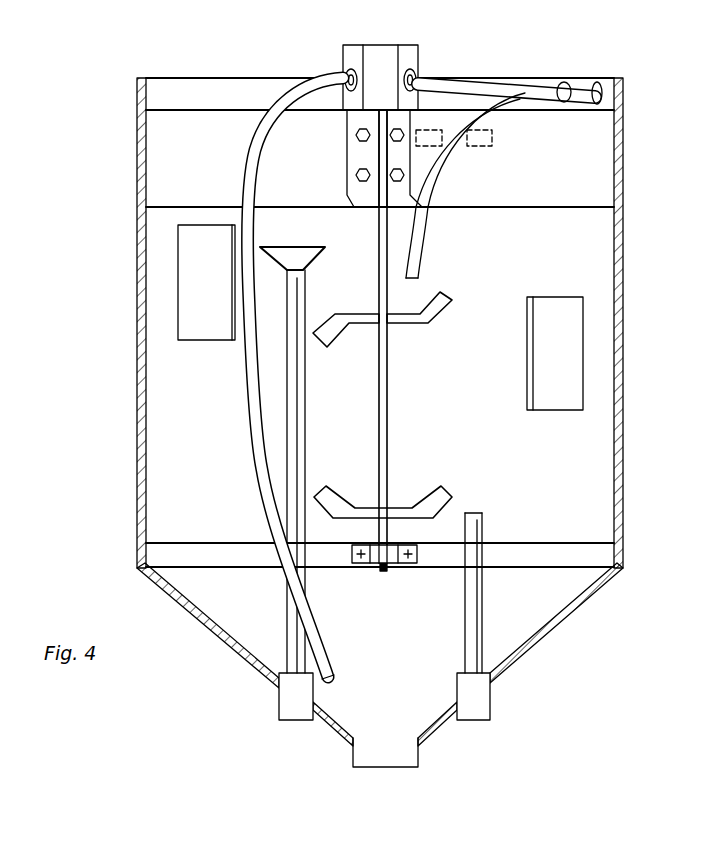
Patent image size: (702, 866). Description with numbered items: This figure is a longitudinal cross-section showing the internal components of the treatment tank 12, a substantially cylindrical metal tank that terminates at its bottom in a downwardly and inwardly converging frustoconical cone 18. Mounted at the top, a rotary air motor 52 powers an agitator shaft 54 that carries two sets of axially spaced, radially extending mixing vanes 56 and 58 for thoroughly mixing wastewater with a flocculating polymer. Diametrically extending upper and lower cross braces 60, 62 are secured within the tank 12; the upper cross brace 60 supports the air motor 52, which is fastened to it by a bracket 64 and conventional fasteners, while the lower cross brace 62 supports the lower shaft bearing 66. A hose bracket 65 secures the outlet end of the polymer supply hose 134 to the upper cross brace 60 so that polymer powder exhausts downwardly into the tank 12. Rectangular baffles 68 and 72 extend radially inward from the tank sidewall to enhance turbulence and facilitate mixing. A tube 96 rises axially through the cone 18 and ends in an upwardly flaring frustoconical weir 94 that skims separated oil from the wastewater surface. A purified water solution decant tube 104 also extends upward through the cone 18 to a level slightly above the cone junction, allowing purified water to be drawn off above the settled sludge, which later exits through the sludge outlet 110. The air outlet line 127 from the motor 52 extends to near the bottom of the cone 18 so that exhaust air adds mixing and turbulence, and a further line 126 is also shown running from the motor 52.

The treatment tank 12 is at (136, 270).
The cone 18 is at (240, 652).
The rotary air motor 52 is at (378, 45).
The agitator shaft 54 is at (387, 464).
The mixing vanes 56 is at (408, 324).
The mixing vanes 58 is at (440, 490).
The upper cross brace 60 is at (160, 136).
The lower cross brace 62 is at (548, 529).
The bracket 64 is at (352, 159).
The hose bracket 65 is at (492, 146).
The lower shaft bearing 66 is at (388, 571).
The baffle 68 is at (212, 340).
The baffle 72 is at (558, 410).
The frustoconical weir 94 is at (296, 246).
The tube 96 is at (298, 437).
The purified water solution decant tube 104 is at (482, 608).
The sludge outlet 110 is at (422, 764).
The supply tube 126 is at (476, 80).
The air outlet line 127 is at (256, 465).
The polymer supply hose 134 is at (424, 246).